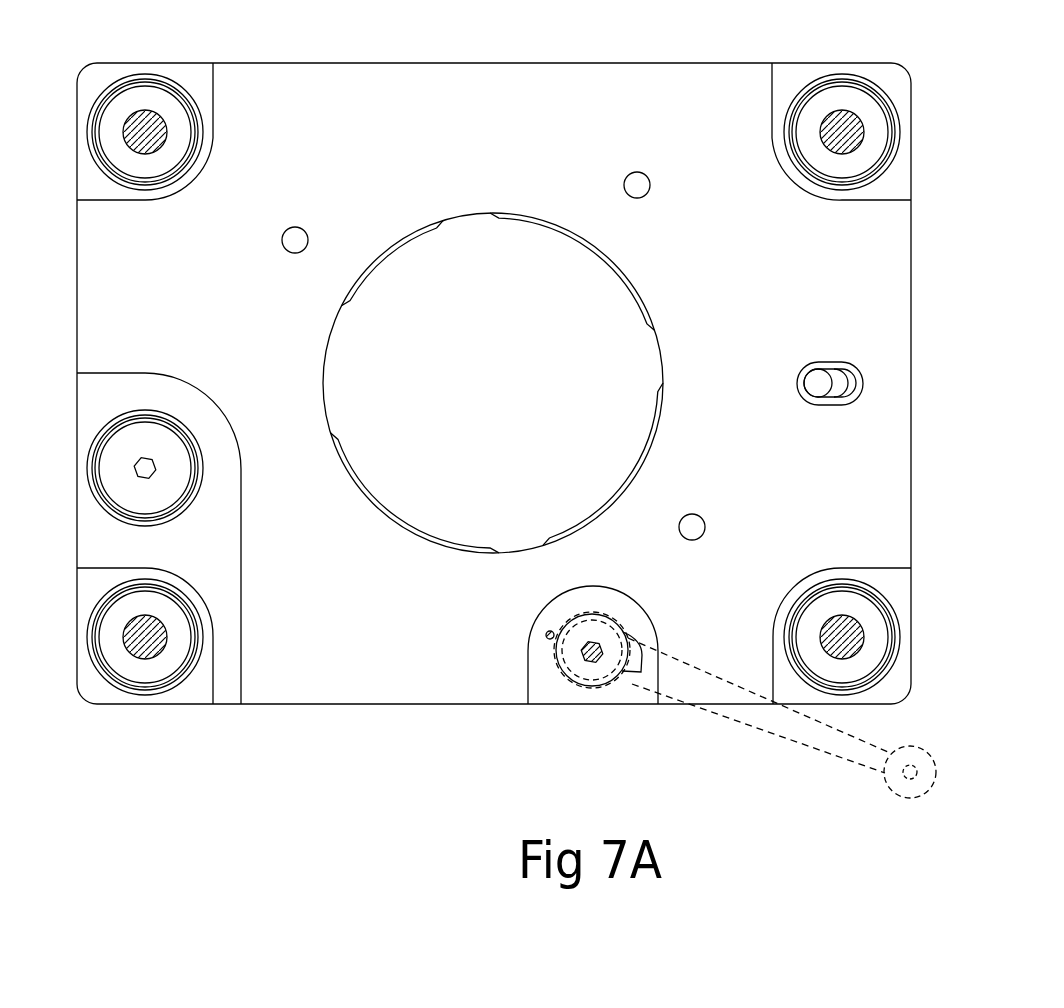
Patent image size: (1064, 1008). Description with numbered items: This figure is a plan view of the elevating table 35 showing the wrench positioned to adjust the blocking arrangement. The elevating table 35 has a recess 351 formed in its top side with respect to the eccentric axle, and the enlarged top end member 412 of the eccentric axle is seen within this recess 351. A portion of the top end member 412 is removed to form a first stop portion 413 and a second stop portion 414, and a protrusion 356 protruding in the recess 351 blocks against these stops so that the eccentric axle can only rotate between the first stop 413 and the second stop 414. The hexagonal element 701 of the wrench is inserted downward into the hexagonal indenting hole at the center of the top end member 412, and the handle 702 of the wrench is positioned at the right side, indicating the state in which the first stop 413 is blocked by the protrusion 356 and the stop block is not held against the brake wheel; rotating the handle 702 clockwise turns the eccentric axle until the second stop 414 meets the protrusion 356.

The elevating table 35 is at (902, 368).
The recess 351 is at (575, 697).
The protrusion 356 is at (553, 640).
The top end member 412 is at (597, 605).
The first stop portion 413 is at (548, 637).
The second stop portion 414 is at (607, 687).
The hexagonal element 701 is at (598, 647).
The handle 702 is at (877, 742).